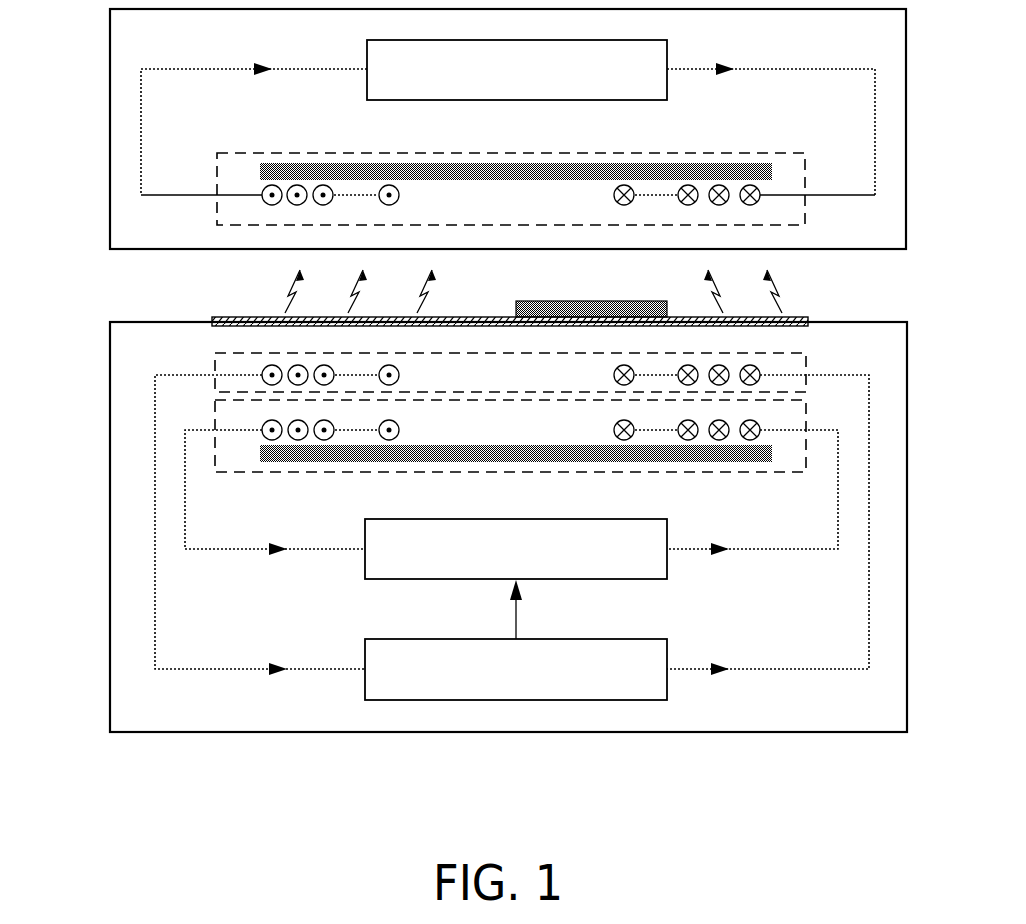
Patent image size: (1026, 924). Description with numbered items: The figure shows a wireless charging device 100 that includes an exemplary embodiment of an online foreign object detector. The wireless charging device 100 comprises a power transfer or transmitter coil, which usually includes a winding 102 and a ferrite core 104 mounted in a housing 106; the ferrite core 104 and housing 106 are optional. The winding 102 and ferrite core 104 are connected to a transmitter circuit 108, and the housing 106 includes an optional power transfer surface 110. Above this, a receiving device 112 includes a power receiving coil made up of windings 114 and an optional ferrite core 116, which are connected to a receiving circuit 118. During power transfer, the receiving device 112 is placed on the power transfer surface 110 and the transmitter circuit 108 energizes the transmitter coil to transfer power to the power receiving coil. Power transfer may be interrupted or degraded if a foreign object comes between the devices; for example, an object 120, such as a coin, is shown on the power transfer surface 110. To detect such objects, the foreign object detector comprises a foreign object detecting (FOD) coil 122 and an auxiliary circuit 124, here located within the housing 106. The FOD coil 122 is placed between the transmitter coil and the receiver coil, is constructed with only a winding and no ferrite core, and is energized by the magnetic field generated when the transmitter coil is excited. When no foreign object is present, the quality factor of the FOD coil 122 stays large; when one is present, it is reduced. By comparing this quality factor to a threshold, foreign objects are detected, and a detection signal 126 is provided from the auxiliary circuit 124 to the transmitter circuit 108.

The wireless charging device 100 is at (117, 310).
The winding 102 is at (760, 427).
The ferrite core 104 is at (707, 463).
The housing 106 is at (110, 355).
The transmitter circuit 108 is at (452, 519).
The power transfer surface 110 is at (245, 318).
The receiving device 112 is at (110, 50).
The windings 114 is at (758, 203).
The ferrite core 116 is at (735, 163).
The receiving circuit 118 is at (367, 60).
The object 120 is at (550, 306).
The foreign object detecting (FOD) coil 122 is at (760, 372).
The auxiliary circuit 124 is at (452, 639).
The detection signal 126 is at (516, 627).